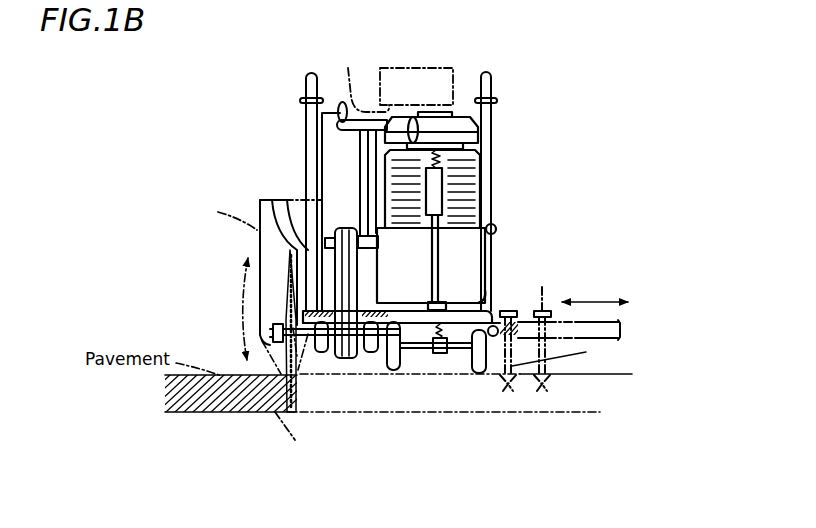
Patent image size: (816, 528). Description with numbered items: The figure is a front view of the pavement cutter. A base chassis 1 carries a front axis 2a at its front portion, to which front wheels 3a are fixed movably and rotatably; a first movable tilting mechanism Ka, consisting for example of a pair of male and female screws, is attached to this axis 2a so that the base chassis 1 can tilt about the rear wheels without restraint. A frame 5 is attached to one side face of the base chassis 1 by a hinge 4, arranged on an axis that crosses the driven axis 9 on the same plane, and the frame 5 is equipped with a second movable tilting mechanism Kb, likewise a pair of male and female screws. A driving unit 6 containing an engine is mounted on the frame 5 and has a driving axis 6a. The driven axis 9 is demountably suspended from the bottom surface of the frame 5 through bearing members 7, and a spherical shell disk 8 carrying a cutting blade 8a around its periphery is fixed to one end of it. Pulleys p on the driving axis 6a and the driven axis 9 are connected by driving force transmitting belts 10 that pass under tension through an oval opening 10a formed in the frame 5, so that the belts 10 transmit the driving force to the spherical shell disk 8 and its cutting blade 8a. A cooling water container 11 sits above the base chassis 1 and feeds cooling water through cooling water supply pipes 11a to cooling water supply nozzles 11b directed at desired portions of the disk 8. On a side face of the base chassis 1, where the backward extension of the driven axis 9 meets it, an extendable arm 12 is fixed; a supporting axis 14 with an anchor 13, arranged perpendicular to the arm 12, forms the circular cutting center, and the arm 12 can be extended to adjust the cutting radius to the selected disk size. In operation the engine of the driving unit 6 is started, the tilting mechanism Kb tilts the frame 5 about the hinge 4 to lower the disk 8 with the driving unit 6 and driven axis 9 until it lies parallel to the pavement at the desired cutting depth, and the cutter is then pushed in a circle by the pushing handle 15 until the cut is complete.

The base chassis 1 is at (457, 354).
The axis 2a is at (423, 352).
The wheels 3a is at (394, 372).
The hinge 4 is at (482, 372).
The frame 5 is at (479, 304).
The driving unit 6 is at (466, 225).
The driving axis 6a is at (360, 210).
The bearing members 7 is at (322, 352).
The spherical shell disk 8 is at (283, 312).
The cutting blade 8a is at (290, 257).
The driven axis 9 is at (259, 203).
The driving force transmitting belts 10 is at (285, 192).
The oval opening 10a is at (364, 310).
The cooling water container 11 is at (430, 67).
The cooling water supply pipes 11a is at (288, 194).
The cooling water supply nozzles 11b is at (278, 426).
The arm 12 is at (622, 321).
The anchor 13 is at (522, 372).
The supporting axis 14 is at (509, 306).
The pushing handle 15 is at (309, 74).
The pulleys p is at (340, 230).
The first movable tilting mechanism Ka is at (452, 260).
The second movable tilting mechanism Kb is at (356, 162).